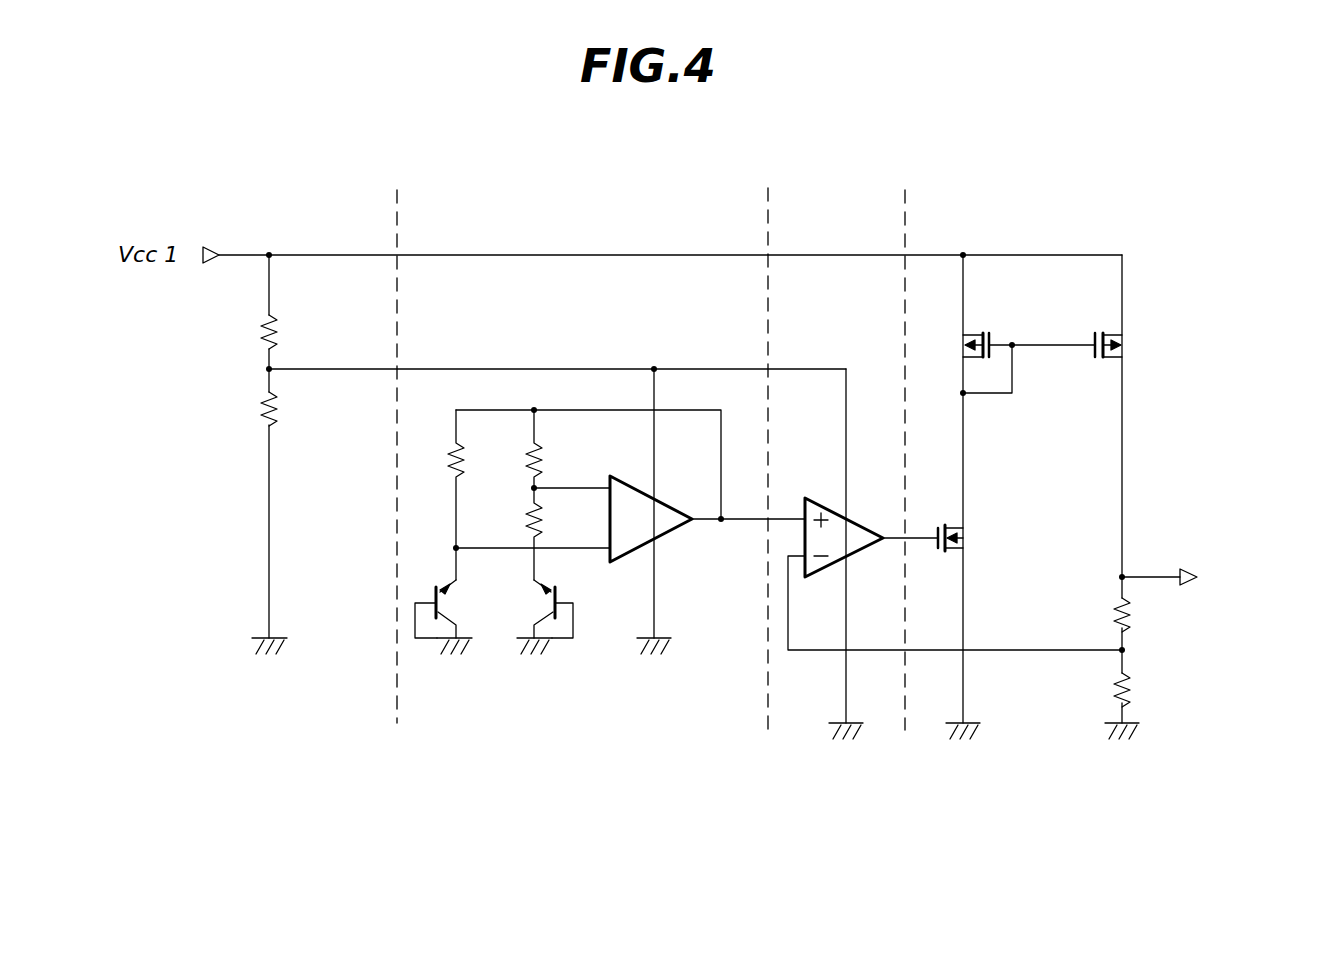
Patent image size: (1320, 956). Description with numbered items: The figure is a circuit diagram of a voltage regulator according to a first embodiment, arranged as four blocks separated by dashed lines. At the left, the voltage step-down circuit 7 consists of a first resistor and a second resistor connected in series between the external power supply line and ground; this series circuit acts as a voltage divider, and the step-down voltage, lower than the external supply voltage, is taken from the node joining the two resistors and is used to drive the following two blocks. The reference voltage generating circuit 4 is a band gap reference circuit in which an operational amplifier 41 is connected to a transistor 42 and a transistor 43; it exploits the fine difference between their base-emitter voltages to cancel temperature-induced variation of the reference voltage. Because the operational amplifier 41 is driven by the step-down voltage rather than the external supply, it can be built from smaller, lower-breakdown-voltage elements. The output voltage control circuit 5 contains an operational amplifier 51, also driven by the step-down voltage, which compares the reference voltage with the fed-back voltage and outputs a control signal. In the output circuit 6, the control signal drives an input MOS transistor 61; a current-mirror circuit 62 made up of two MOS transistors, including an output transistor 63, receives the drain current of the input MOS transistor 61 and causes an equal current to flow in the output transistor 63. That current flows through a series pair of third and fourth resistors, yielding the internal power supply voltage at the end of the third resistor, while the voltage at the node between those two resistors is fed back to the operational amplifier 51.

The reference voltage generating circuit 4 is at (560, 238).
The output voltage control circuit 5 is at (838, 228).
The output circuit 6 is at (997, 228).
The voltage step-down circuit 7 is at (310, 222).
The operational amplifier 41 is at (670, 533).
The transistor 42 is at (441, 587).
The transistor 43 is at (558, 598).
The operational amplifier 51 is at (858, 553).
The input MOS transistor 61 is at (965, 537).
The current-mirror circuit 62 is at (1052, 366).
The output transistor 63 is at (1133, 345).